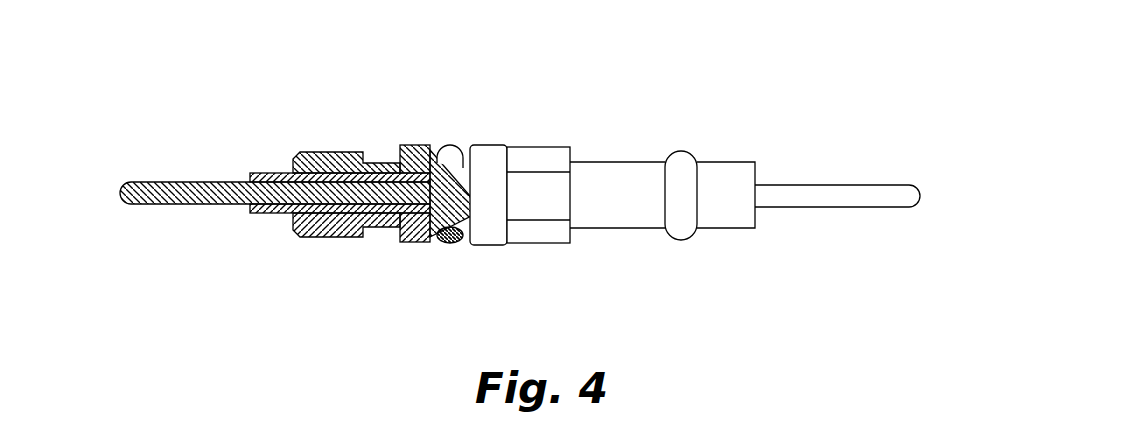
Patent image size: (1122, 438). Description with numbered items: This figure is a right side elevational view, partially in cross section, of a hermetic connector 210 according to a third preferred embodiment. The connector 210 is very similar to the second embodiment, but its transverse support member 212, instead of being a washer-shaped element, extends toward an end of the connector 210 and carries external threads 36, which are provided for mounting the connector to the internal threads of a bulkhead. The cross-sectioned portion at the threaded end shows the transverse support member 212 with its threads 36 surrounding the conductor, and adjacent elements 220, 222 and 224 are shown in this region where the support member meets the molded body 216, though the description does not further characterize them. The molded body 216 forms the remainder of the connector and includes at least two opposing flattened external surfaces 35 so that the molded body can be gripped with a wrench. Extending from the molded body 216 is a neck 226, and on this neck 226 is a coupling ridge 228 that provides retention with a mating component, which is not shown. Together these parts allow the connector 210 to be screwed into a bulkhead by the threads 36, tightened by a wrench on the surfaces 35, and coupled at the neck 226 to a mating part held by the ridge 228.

The connector 210 is at (776, 121).
The external threads 36 is at (328, 152).
The transverse support member 212 is at (403, 145).
The ferrule sleeve 220 is at (423, 243).
The sealing ring 224 is at (453, 147).
The O-ring 222 is at (463, 245).
The molded body 216 is at (490, 145).
The flattened external surfaces 35 is at (540, 244).
The neck 226 is at (620, 162).
The coupling ridge 228 is at (678, 240).